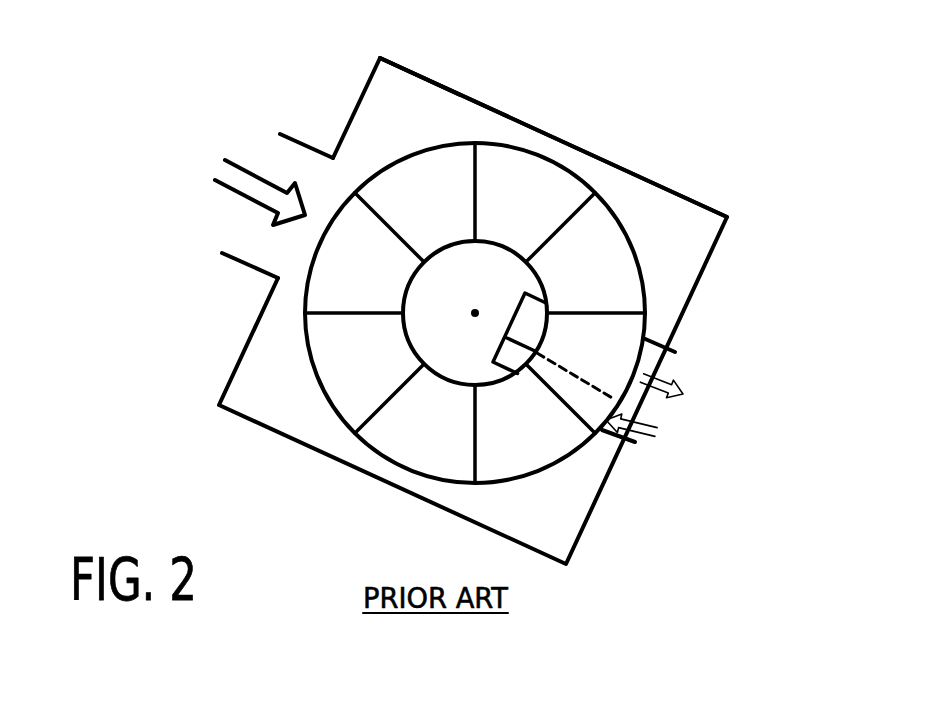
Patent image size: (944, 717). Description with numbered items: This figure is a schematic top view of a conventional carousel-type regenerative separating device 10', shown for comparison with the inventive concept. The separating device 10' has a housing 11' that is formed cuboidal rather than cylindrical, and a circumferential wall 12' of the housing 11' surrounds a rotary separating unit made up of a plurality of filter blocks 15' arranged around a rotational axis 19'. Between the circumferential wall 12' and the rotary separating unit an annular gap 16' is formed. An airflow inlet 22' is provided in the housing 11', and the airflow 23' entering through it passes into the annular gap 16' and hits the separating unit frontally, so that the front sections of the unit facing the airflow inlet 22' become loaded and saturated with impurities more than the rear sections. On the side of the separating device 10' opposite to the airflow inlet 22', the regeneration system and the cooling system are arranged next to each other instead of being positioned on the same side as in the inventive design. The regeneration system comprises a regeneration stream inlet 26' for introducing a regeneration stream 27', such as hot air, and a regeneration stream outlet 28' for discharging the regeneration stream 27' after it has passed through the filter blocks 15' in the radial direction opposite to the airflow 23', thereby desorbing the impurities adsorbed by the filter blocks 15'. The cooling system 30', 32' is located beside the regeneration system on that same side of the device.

The separating device 10' is at (566, 255).
The housing 11' is at (473, 291).
The circumferential wall 12' is at (553, 119).
The filter blocks 15' is at (481, 281).
The annular gap 16' is at (433, 53).
The rotational axis 19' is at (346, 415).
The airflow inlet 22' is at (240, 233).
The airflow 23' is at (260, 146).
The regeneration stream inlet 26' is at (628, 269).
The regeneration stream 27' is at (708, 362).
The regeneration stream outlet 28' is at (682, 365).
The cooling system 30' is at (656, 474).
The cooling system 32' is at (587, 474).